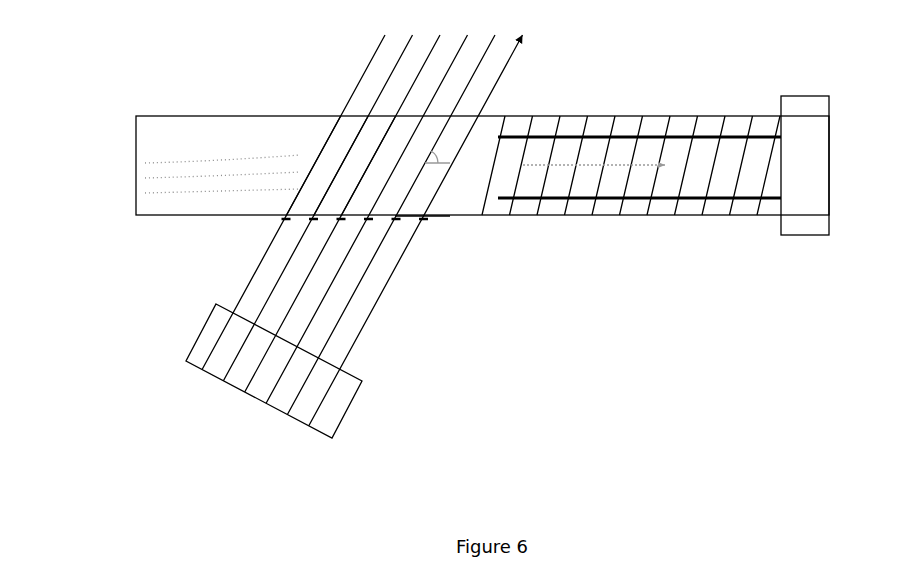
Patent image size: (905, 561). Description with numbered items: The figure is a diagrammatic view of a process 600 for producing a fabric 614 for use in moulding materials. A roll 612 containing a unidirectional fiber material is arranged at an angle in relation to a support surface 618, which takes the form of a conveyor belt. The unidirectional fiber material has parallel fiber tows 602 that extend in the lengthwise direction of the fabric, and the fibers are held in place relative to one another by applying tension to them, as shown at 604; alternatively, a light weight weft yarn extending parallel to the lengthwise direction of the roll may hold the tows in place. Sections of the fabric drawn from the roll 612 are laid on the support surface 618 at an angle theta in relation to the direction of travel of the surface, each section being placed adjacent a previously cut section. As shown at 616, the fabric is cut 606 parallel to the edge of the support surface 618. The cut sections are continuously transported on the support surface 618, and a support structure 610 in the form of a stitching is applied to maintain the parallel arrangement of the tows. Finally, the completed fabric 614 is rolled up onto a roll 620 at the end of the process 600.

The process 600 is at (120, 87).
The parallel fiber tows 602 is at (382, 252).
The tension applied to fibers 604 is at (443, 198).
The cut 606 is at (330, 222).
The support structure 610 is at (532, 200).
The roll 612 is at (369, 393).
The fabric 614 is at (497, 111).
The cutting location 616 is at (432, 227).
The support surface 618 is at (270, 160).
The roll 620 is at (801, 145).